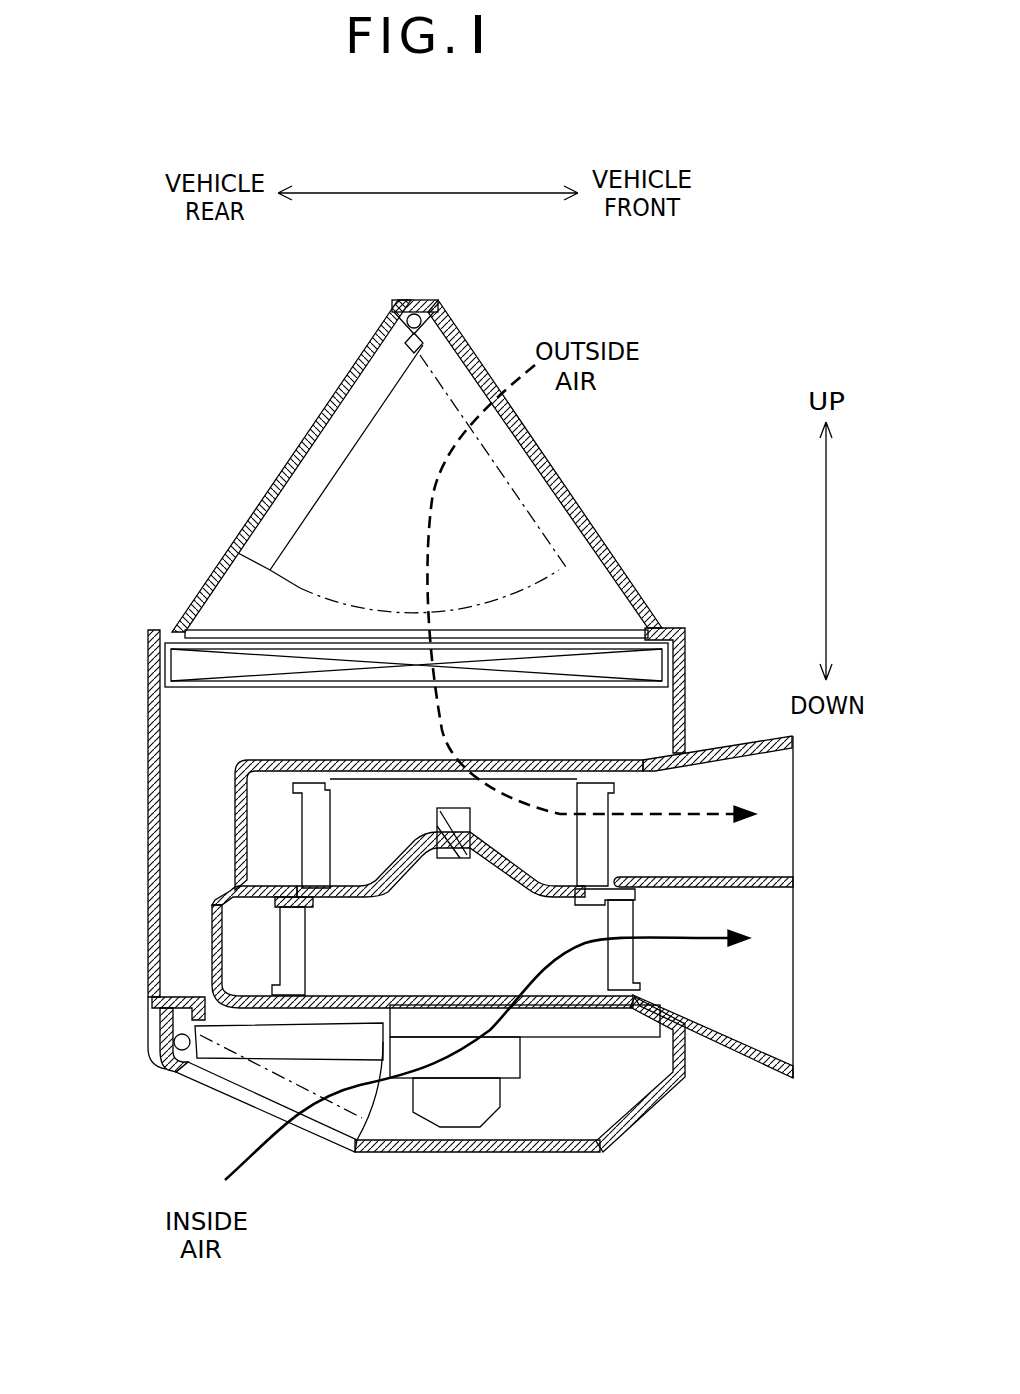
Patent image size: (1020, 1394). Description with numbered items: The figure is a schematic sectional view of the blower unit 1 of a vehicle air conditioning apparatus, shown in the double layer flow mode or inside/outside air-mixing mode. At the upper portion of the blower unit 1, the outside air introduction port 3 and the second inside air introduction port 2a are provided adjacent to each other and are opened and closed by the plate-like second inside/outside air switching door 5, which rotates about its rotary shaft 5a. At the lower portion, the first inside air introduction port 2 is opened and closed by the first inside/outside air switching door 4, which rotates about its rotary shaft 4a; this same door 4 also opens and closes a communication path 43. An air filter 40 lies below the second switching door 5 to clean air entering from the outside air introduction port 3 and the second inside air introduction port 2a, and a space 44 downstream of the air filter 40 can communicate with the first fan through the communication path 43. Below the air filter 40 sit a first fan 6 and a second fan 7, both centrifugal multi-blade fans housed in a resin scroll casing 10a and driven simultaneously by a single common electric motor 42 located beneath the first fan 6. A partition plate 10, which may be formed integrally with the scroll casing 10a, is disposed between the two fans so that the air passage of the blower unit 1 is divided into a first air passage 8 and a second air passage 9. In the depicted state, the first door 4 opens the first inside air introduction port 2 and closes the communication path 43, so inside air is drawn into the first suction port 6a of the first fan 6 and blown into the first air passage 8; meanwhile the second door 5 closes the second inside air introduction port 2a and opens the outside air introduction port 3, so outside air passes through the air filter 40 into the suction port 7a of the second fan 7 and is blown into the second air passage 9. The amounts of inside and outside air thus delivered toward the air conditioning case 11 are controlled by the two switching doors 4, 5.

The blower unit 1 is at (112, 640).
The first inside air introduction port 2 is at (322, 1150).
The second inside air introduction port 2a is at (268, 488).
The outside air introduction port 3 is at (567, 497).
The first inside/outside air switching door 4 is at (222, 1070).
The rotary shaft 4a is at (174, 1045).
The second inside/outside air switching door 5 is at (348, 417).
The rotary shaft 5a is at (414, 312).
The first fan 6 is at (288, 927).
The first suction port 6a is at (590, 1000).
The second fan 7 is at (313, 833).
The suction port 7a is at (368, 760).
The first air passage 8 is at (765, 1005).
The second air passage 9 is at (765, 797).
The partition plate 10 is at (740, 872).
The scroll casing 10a is at (197, 937).
The air conditioning case 11 is at (630, 585).
The air filter 40 is at (637, 665).
The electric motor 42 is at (508, 1055).
The communication path 43 is at (250, 987).
The space 44 is at (198, 737).